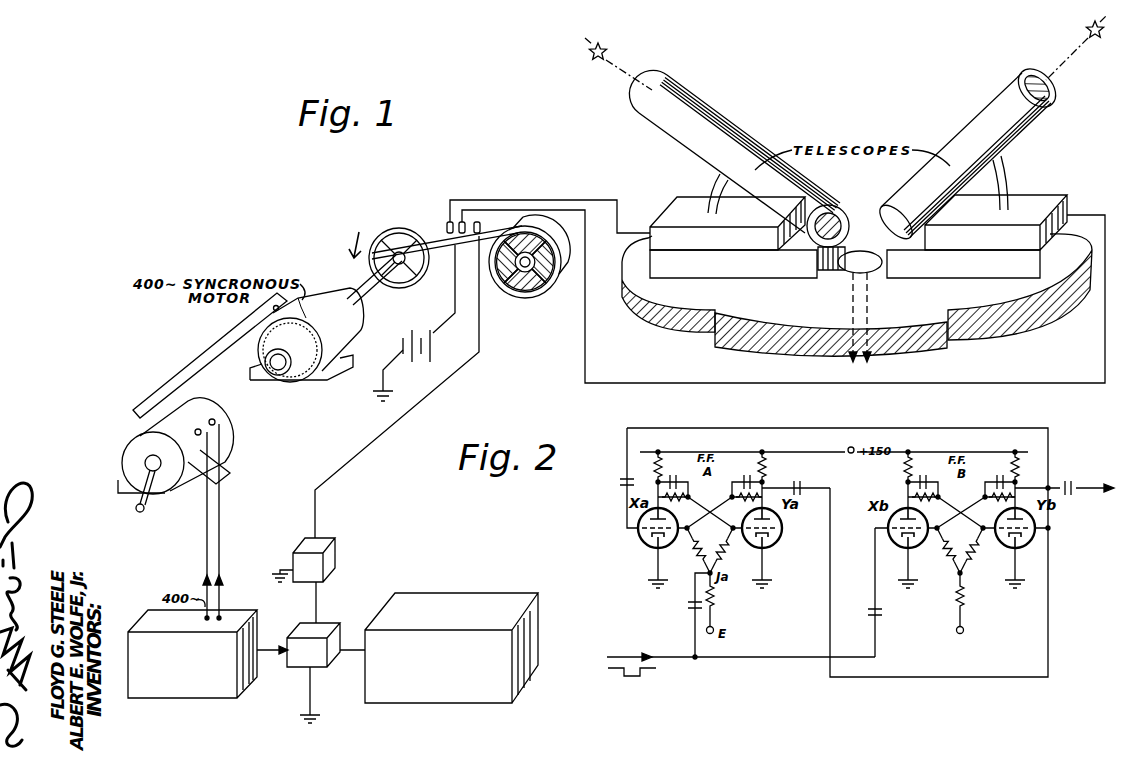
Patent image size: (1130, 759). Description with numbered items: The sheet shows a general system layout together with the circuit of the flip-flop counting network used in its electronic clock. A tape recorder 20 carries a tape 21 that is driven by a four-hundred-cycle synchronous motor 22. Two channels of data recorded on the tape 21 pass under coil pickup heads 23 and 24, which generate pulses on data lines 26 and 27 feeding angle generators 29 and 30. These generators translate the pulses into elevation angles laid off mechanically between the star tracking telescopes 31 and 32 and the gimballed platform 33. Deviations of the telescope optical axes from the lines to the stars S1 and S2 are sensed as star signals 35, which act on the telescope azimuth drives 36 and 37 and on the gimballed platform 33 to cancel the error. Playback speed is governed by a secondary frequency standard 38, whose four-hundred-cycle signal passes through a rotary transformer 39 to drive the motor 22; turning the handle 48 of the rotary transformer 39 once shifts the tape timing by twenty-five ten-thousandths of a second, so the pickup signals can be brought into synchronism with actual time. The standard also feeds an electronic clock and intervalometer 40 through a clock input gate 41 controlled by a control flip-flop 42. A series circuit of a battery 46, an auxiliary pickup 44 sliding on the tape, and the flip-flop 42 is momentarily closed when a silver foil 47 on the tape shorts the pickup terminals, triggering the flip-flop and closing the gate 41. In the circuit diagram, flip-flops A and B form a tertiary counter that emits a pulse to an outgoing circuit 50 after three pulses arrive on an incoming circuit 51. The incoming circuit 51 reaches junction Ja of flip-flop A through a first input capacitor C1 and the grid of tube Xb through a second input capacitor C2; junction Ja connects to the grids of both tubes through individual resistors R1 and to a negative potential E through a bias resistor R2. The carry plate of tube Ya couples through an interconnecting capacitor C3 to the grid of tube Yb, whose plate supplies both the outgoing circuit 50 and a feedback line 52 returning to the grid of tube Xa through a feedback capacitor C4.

In FIG. 1, the tape recorder 20 is at (427, 222).
In FIG. 1, the tape 21 is at (536, 227).
In FIG. 1, the 400 cycle synchronous motor 22 is at (326, 318).
In FIG. 1, the coil pickup head 23 is at (448, 222).
In FIG. 1, the coil pickup head 24 is at (463, 222).
In FIG. 1, the auxiliary pickup 44 is at (478, 222).
In FIG. 1, the silver foil 47 is at (484, 236).
In FIG. 1, the data line 26 is at (553, 200).
In FIG. 1, the data line 27 is at (586, 355).
In FIG. 1, the battery 46 is at (421, 356).
In FIG. 1, the rotary transformer 39 is at (104, 447).
In FIG. 1, the handle 48 is at (147, 510).
In FIG. 1, the secondary frequency standard 38 is at (192, 655).
In FIG. 1, the control flip-flop 42 is at (338, 562).
In FIG. 1, the clock input gate 41 is at (292, 684).
In FIG. 1, the electronic clock and intervalometer 40 is at (478, 615).
In FIG. 1, the star S1 is at (609, 48).
In FIG. 1, the star S2 is at (1088, 28).
In FIG. 1, the star tracking telescope 31 is at (739, 158).
In FIG. 1, the star tracking telescope 32 is at (968, 153).
In FIG. 1, the angle generator 29 is at (683, 218).
In FIG. 1, the angle generator 30 is at (1032, 204).
In FIG. 1, the telescope azimuth drive 36 is at (800, 270).
In FIG. 1, the telescope azimuth drive 37 is at (932, 281).
In FIG. 1, the gimballed platform 33 is at (857, 295).
In FIG. 1, the star signals 35 is at (919, 318).
In FIG. 2, the feedback line 52 is at (830, 428).
In FIG. 2, the incoming circuit 51 is at (672, 668).
In FIG. 2, the outgoing circuit 50 is at (1064, 489).
In FIG. 2, the individual resistor R1 is at (706, 558).
In FIG. 2, the bias resistor R2 is at (723, 603).
In FIG. 2, the first input capacitor C1 is at (690, 607).
In FIG. 2, the second input capacitor C2 is at (880, 616).
In FIG. 2, the interconnecting capacitor C3 is at (798, 484).
In FIG. 2, the feedback capacitor C4 is at (621, 483).